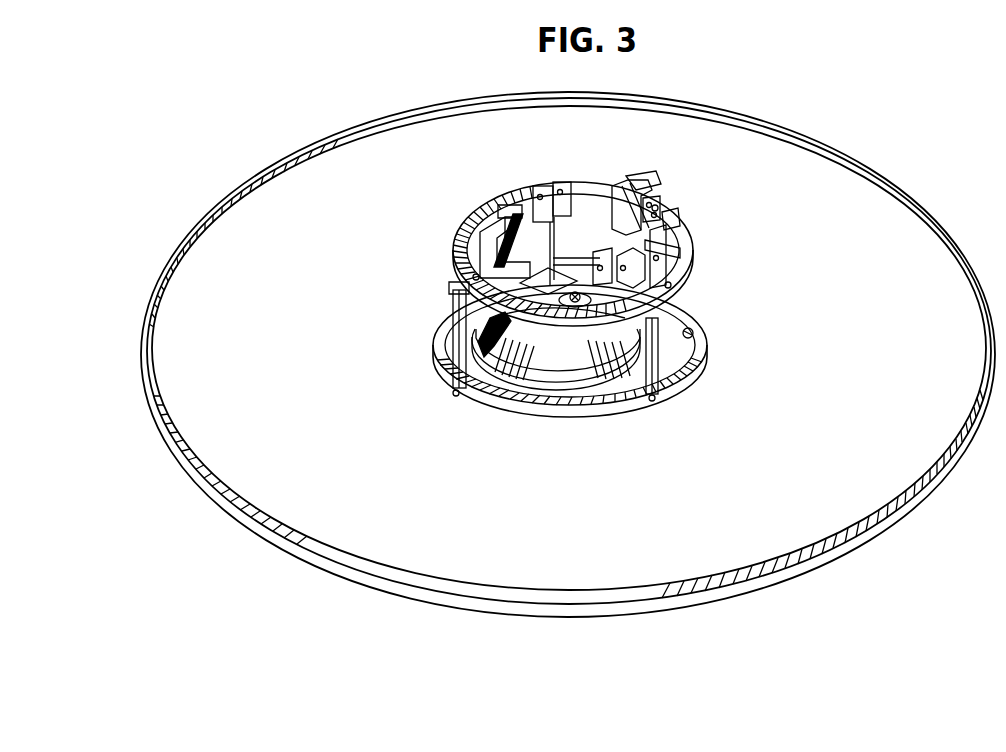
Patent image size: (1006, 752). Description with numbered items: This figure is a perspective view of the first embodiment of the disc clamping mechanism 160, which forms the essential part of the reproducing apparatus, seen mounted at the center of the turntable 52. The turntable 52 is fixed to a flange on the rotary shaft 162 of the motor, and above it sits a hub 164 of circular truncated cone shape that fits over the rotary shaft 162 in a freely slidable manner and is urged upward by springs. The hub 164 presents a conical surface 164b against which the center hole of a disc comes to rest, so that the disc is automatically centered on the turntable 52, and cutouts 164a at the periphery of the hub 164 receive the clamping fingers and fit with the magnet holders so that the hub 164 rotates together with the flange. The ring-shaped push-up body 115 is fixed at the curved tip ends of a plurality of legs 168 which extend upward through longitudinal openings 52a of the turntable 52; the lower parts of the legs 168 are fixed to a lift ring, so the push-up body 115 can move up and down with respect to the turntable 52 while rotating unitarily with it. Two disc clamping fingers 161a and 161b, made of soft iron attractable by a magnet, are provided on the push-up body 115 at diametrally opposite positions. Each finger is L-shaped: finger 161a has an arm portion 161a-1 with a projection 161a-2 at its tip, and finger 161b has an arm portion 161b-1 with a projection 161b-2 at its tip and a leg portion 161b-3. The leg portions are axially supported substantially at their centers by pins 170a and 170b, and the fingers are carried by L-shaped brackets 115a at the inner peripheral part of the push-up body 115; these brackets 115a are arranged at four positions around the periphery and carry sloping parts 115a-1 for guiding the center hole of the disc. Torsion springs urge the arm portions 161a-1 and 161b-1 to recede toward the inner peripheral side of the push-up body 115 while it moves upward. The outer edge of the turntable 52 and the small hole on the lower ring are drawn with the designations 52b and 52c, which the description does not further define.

The turntable 52 is at (731, 105).
The longitudinal openings 52a is at (452, 388).
The disc rim 52b is at (873, 178).
The hole 52c is at (712, 327).
The push-up body 115 is at (688, 244).
The L-shaped brackets 115a is at (620, 255).
The sloping parts 115a-1 is at (642, 250).
The disc clamping mechanism 160 is at (846, 87).
The disc clamping finger 161a is at (520, 200).
The arm portion 161a-1 is at (500, 210).
The projection 161a-2 is at (481, 230).
The disc clamping finger 161b is at (622, 188).
The arm portion 161b-1 is at (632, 188).
The projection 161b-2 is at (652, 207).
The leg portion 161b-3 is at (595, 192).
The rotary shaft 162 is at (573, 305).
The hub 164 is at (562, 382).
The cutouts 164a is at (496, 378).
The conical surface 164b is at (541, 380).
The legs 168 is at (455, 350).
The pin 170a is at (452, 289).
The pin 170b is at (680, 221).